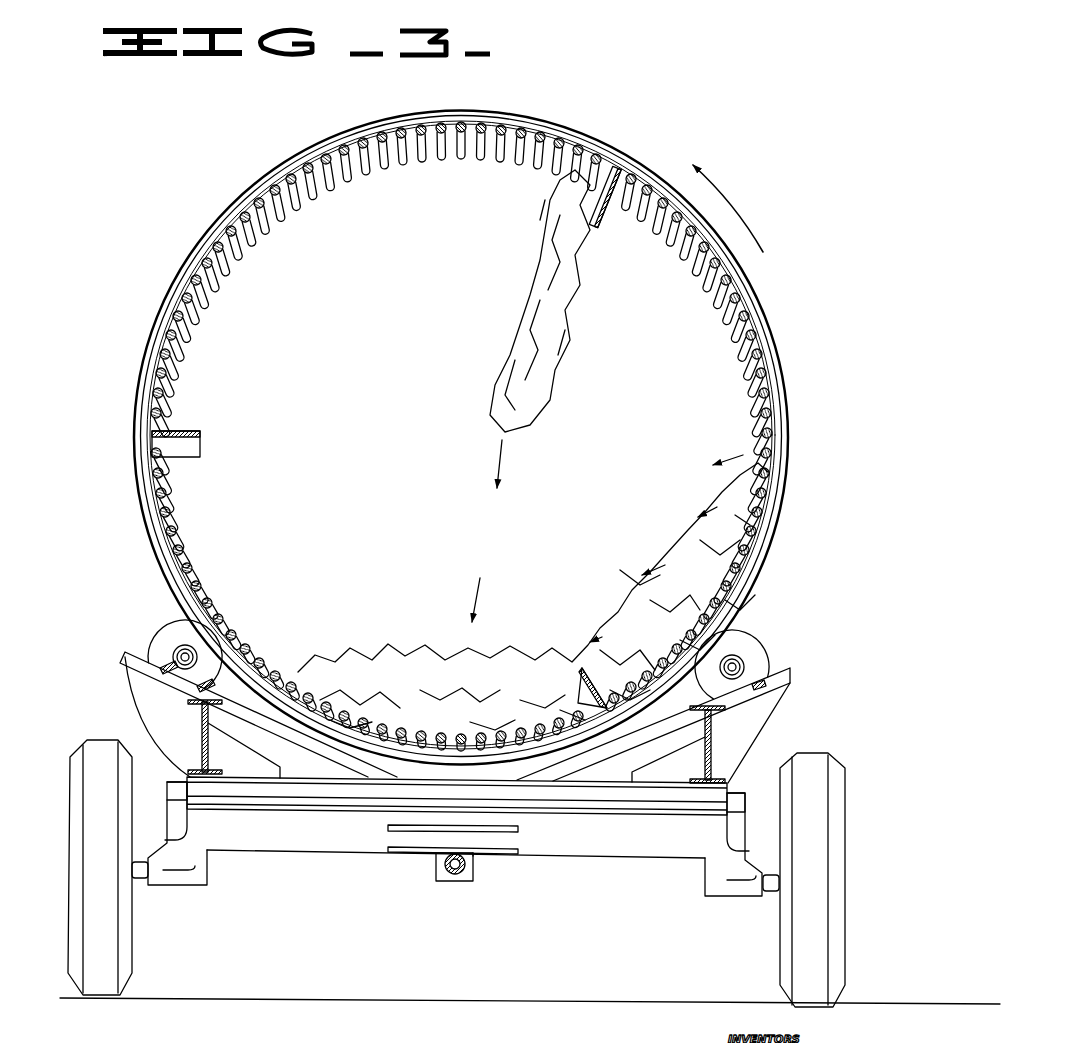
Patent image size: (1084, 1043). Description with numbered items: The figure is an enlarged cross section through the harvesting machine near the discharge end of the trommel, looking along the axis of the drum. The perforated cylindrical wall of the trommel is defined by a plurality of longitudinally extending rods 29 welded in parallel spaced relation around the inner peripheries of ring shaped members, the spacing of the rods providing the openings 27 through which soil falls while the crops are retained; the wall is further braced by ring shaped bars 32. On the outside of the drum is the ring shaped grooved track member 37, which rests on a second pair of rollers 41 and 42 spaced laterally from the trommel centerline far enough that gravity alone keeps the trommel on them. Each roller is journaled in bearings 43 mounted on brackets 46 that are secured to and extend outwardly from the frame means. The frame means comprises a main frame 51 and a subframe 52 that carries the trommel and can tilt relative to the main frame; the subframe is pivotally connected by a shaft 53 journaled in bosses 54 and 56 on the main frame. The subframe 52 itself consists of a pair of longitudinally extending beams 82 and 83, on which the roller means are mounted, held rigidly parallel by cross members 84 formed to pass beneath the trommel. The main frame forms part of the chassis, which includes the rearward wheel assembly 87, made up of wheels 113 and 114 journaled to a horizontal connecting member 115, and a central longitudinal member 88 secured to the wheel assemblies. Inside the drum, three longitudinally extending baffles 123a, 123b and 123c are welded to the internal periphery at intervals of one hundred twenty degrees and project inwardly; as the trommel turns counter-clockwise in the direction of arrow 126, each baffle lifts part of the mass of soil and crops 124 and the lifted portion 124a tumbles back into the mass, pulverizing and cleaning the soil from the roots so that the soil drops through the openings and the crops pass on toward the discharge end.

The openings 27 is at (432, 124).
The longitudinally extending rods 29 is at (503, 126).
The ring shaped bars 32 is at (532, 121).
The grooved track member 37 is at (752, 592).
The roller 41 is at (753, 650).
The roller 42 is at (160, 641).
The bearings 43 is at (170, 672).
The brackets 46 is at (125, 670).
The main frame 51 is at (478, 862).
The subframe 52 is at (712, 741).
The shaft 53 is at (187, 768).
The boss 54 is at (740, 797).
The boss 56 is at (172, 782).
The longitudinally extending beam 82 is at (715, 722).
The longitudinally extending beam 83 is at (203, 714).
The cross members 84 is at (278, 732).
The rearward wheel assembly 87 is at (322, 888).
The central longitudinal member 88 is at (450, 872).
The wheel 113 is at (790, 962).
The wheel 114 is at (122, 955).
The horizontal connecting member 115 is at (570, 852).
The baffle 123a is at (601, 229).
The baffle 123b is at (597, 650).
The baffle 123c is at (196, 432).
The mass of soil and crops 124 is at (490, 724).
The portion of the mass 124a is at (570, 218).
The arrow 126 is at (736, 205).